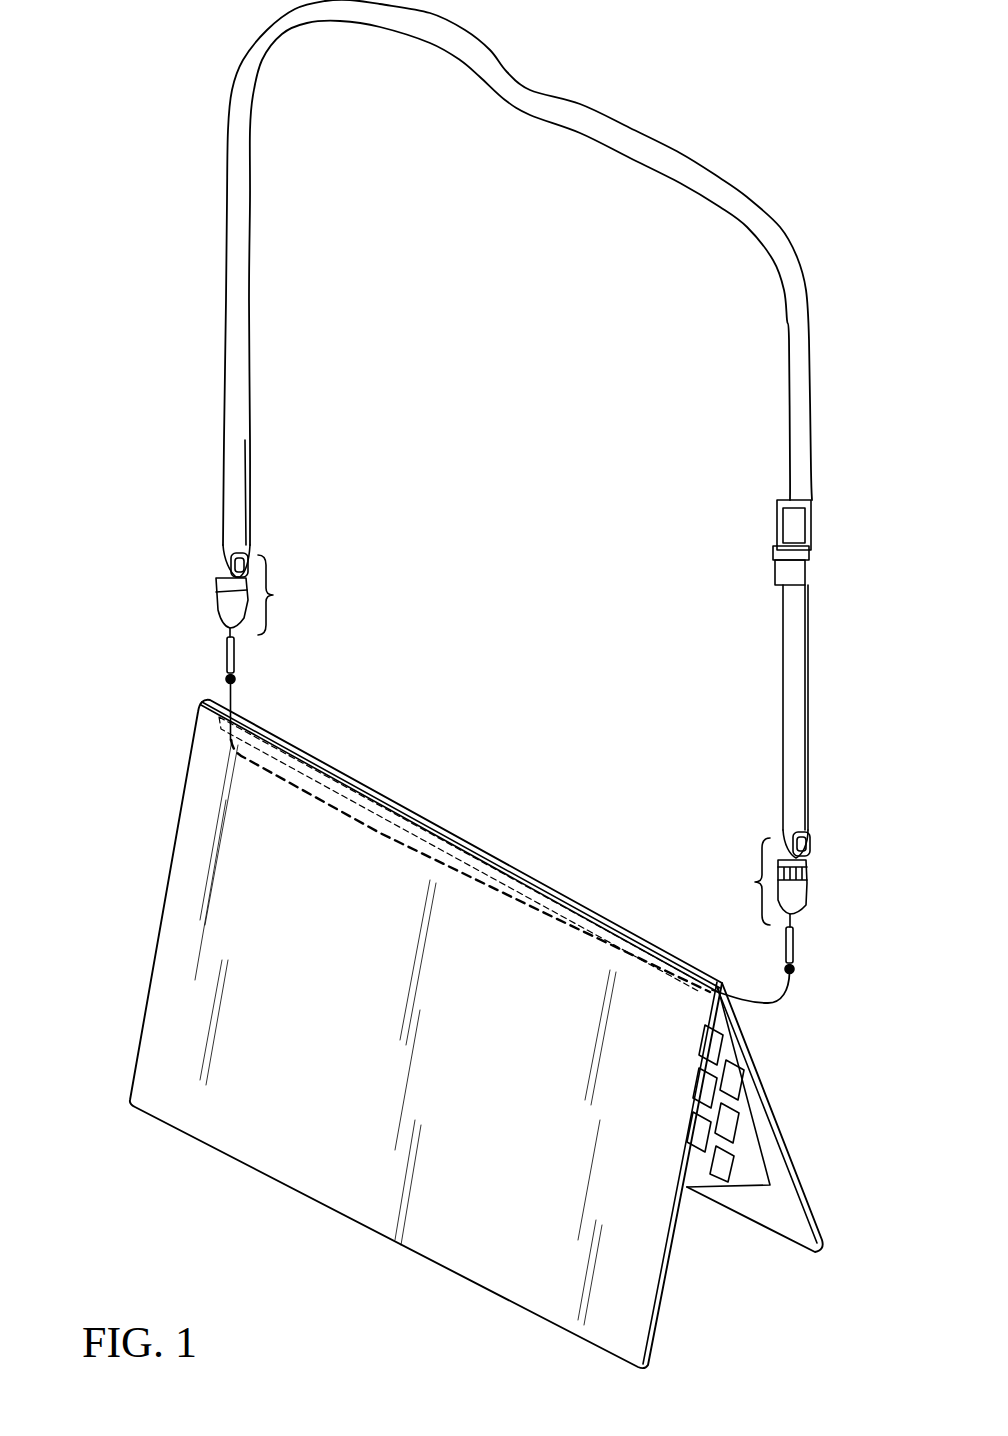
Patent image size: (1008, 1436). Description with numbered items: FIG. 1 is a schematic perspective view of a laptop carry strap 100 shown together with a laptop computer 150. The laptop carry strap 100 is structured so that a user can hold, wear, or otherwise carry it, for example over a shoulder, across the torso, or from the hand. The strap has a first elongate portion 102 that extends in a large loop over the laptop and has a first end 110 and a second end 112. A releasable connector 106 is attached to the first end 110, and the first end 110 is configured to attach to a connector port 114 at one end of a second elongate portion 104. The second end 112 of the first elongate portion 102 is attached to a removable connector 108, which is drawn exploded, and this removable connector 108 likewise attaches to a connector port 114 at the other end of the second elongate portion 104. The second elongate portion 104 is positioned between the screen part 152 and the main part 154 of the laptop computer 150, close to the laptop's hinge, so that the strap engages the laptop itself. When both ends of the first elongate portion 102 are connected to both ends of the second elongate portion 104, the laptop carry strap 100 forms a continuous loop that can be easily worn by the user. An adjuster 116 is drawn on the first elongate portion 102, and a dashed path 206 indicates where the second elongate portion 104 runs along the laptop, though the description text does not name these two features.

The laptop carry strap 100 is at (157, 258).
The first elongate portion 102 is at (497, 83).
The second elongate portion 104 is at (215, 700).
The releasable connector 106 is at (284, 595).
The removable connector 108 is at (742, 881).
The first end 110 is at (225, 584).
The second end 112 is at (220, 598).
The connector port 114 is at (236, 658).
The buckle 116 is at (812, 513).
The laptop computer 150 is at (122, 902).
The screen part 152 is at (150, 1088).
The main part 154 is at (790, 1216).
The channel 206 is at (492, 862).